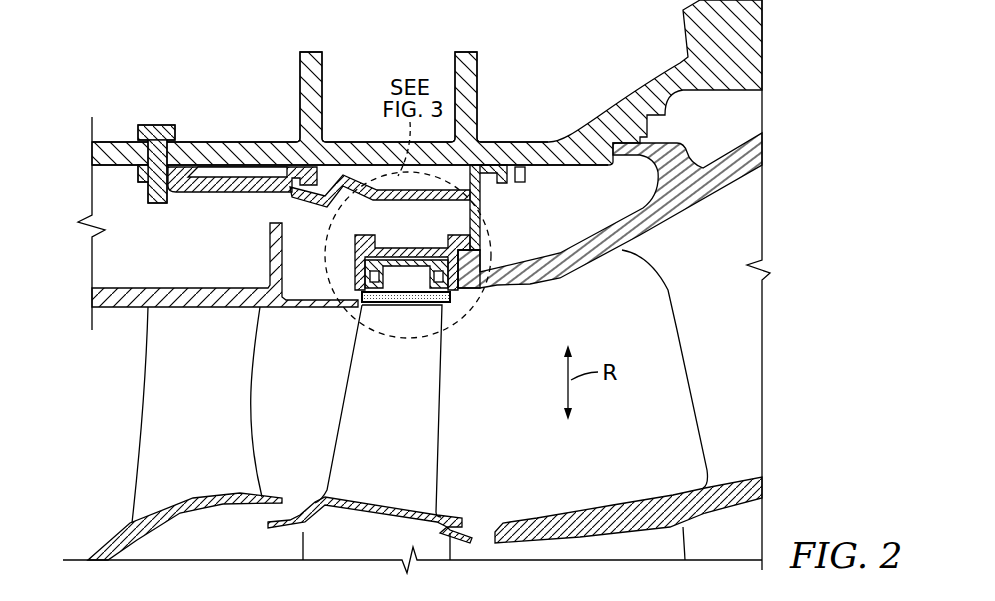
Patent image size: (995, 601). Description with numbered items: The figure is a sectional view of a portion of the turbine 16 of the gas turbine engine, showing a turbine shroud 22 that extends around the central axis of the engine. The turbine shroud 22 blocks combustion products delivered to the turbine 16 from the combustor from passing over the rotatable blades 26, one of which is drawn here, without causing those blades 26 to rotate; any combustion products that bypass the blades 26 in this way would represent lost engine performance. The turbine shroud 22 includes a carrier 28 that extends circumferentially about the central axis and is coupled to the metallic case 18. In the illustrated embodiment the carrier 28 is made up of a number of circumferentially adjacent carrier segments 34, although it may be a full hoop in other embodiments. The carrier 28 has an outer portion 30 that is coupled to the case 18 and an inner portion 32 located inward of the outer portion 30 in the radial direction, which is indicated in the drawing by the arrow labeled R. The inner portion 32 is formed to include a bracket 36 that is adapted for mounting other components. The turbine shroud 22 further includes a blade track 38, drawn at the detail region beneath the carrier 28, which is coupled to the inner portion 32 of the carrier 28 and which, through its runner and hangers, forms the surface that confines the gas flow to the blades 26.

The turbine 16 is at (506, 58).
The metallic case 18 is at (240, 152).
The turbine shroud 22 is at (447, 210).
The rotatable blade 26 is at (385, 403).
The carrier 28 is at (522, 200).
The outer portion 30 is at (462, 210).
The inner portion 32 is at (486, 261).
The carrier segment 34 is at (340, 257).
The bracket 36 is at (403, 262).
The blade track 38 is at (355, 318).